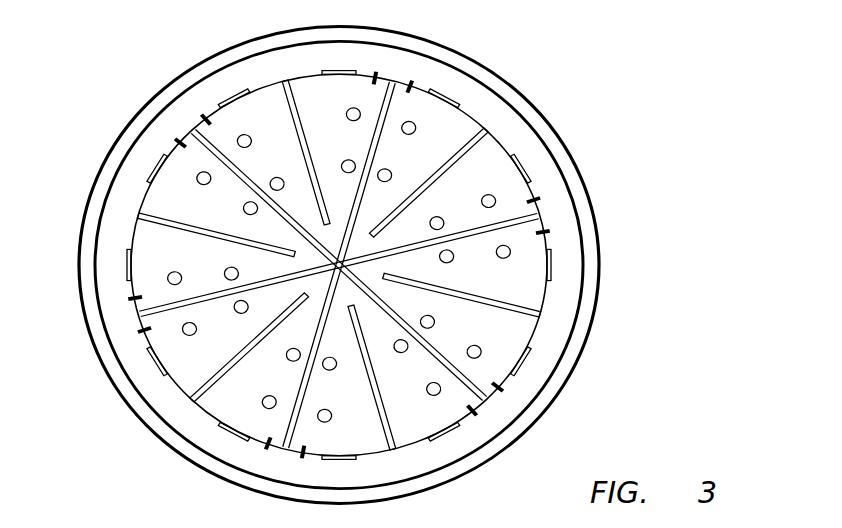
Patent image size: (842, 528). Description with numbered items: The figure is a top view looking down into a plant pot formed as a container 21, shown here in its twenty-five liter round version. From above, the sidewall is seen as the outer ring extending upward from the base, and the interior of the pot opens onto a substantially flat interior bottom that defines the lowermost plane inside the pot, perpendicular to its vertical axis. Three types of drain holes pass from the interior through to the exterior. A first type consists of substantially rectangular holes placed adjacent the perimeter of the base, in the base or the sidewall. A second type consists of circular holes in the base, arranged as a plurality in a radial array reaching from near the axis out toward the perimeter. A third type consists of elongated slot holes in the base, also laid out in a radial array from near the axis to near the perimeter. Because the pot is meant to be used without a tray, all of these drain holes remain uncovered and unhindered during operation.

The container 21 is at (406, 265).